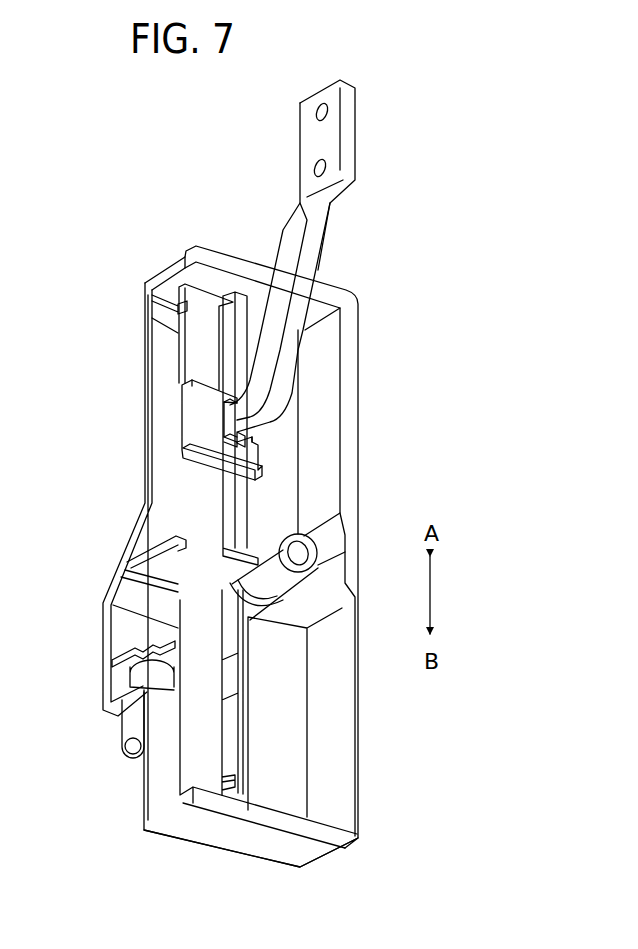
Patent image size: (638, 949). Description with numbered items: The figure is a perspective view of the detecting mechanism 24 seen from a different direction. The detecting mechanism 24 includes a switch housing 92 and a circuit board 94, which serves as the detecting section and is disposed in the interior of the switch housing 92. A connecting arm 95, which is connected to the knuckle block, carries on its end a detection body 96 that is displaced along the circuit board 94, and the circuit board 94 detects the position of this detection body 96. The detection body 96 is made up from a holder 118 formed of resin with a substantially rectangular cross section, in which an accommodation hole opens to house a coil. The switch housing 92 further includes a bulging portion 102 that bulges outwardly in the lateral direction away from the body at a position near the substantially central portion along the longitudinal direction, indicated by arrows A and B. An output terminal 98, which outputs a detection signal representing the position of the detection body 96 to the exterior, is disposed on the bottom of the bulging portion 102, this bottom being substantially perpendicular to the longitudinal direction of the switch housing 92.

The detecting mechanism 24 is at (370, 286).
The connecting arm 95 is at (293, 214).
The circuit board 94 is at (195, 352).
The detection body 96 is at (259, 430).
The holder 118 is at (250, 455).
The bulging portion 102 is at (125, 620).
The output terminal 98 is at (127, 752).
The switch housing 92 is at (237, 838).